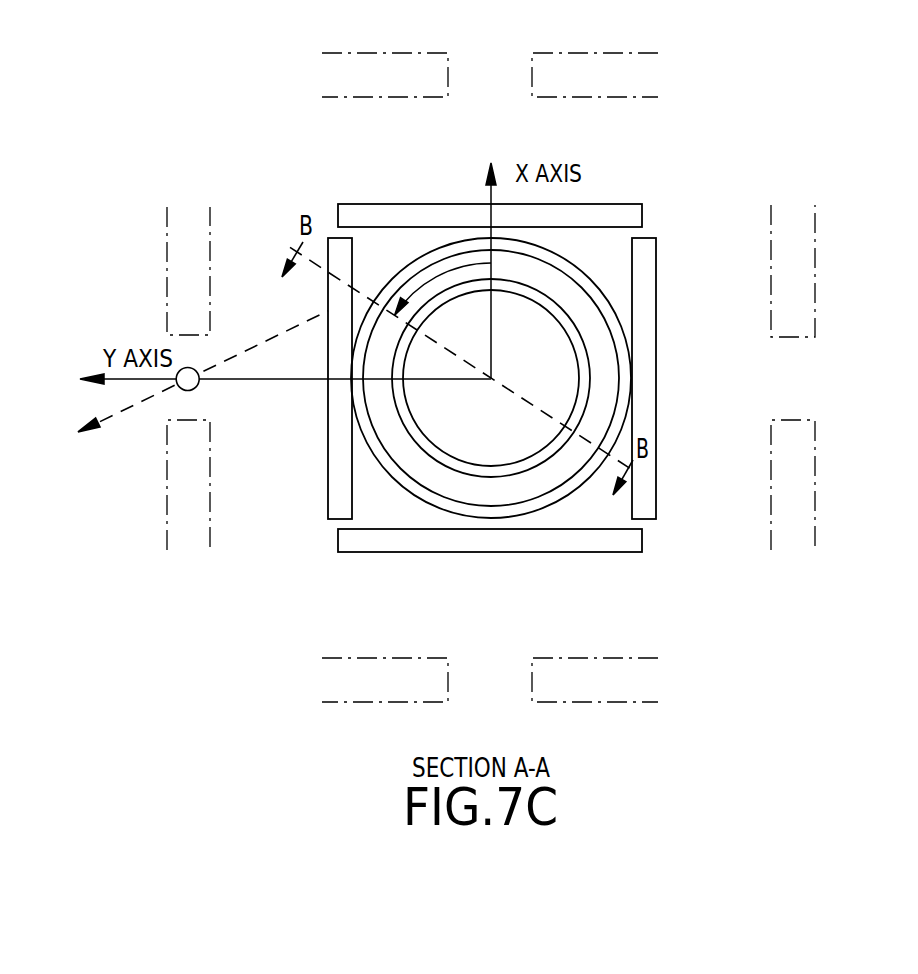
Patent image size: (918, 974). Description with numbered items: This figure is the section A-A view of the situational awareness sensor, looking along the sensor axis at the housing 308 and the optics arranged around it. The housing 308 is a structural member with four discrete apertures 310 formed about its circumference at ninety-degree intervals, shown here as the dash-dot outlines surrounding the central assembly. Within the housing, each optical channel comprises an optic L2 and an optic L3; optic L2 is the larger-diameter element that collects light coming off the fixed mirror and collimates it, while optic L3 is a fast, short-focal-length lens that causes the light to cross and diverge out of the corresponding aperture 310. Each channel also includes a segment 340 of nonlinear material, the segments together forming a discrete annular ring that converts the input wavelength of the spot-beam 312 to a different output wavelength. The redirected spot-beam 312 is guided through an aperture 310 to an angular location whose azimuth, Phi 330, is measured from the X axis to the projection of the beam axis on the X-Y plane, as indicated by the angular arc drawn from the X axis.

The housing 308 is at (167, 502).
The apertures 310 is at (155, 414).
The spot-beam 312 is at (195, 388).
The Phi 330 is at (427, 280).
The segment of NLM 340 is at (612, 303).
The optic L2 is at (562, 272).
The optic L3 is at (317, 577).